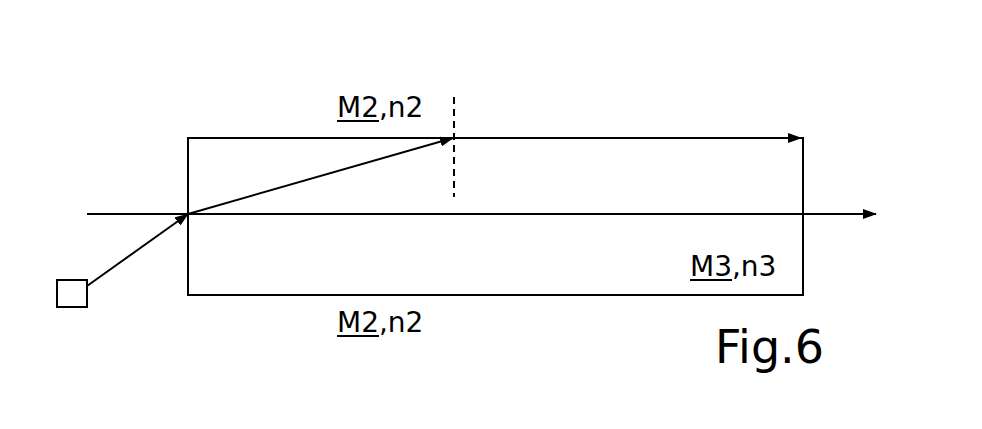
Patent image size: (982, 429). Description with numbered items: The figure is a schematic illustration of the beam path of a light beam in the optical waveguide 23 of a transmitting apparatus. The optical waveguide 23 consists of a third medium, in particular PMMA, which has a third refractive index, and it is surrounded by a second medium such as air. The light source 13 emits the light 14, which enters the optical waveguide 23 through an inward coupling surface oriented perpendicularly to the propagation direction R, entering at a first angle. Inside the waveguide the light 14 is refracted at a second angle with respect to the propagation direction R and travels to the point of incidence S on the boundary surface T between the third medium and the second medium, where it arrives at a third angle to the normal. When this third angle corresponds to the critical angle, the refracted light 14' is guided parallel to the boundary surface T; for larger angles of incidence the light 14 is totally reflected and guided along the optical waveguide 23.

The light source 13 is at (70, 307).
The light 14 is at (270, 219).
The refracted light 14' is at (627, 102).
The optical waveguide 23 is at (784, 180).
The point of incidence S is at (458, 98).
The boundary surface T is at (222, 136).
The propagation direction R is at (828, 217).